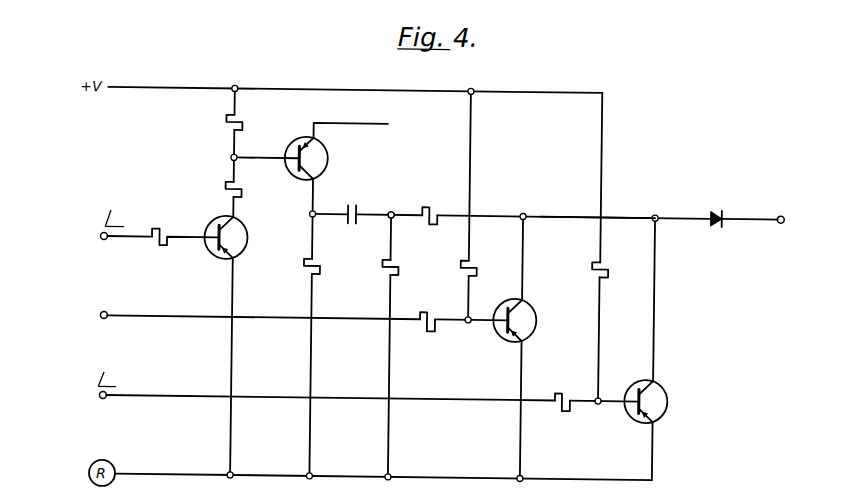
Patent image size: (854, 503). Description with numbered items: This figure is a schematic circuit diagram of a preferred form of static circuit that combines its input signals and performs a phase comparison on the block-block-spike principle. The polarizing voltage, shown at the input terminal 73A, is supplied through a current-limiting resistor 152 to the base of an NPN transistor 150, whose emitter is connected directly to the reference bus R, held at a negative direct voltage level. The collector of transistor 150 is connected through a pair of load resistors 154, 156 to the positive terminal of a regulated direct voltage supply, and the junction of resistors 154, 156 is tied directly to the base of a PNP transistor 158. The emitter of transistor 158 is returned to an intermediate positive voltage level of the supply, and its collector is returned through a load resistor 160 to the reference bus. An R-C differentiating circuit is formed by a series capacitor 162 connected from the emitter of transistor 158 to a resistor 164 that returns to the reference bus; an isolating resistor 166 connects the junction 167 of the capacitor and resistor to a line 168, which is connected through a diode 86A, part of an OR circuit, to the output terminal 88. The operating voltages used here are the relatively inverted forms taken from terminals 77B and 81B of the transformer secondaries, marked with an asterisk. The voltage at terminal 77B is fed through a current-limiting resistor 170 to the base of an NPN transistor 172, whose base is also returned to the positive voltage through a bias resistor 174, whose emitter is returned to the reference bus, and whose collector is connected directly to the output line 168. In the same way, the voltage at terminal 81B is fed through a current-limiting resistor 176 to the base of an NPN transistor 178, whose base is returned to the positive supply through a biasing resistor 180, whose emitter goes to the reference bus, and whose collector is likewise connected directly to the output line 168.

The NPN transistor 150 is at (248, 239).
The current-limiting resistor 152 is at (156, 230).
The load resistor 154 is at (226, 188).
The load resistor 156 is at (230, 120).
The PNP transistor 158 is at (327, 159).
The load resistor 160 is at (304, 260).
The series capacitor 162 is at (348, 226).
The resistor 164 is at (383, 260).
The isolating resistor 166 is at (427, 207).
The junction 167 is at (391, 212).
The output line 168 is at (560, 213).
The current-limiting resistor 170 is at (431, 334).
The NPN transistor 172 is at (538, 326).
The bias resistor 174 is at (462, 260).
The current-limiting resistor 176 is at (567, 410).
The NPN transistor 178 is at (670, 400).
The biasing resistor 180 is at (592, 266).
The diode 86A is at (719, 208).
The output terminal 88 is at (779, 219).
The input terminal 73A is at (108, 244).
The terminal 77B is at (107, 322).
The terminal 81B is at (108, 403).